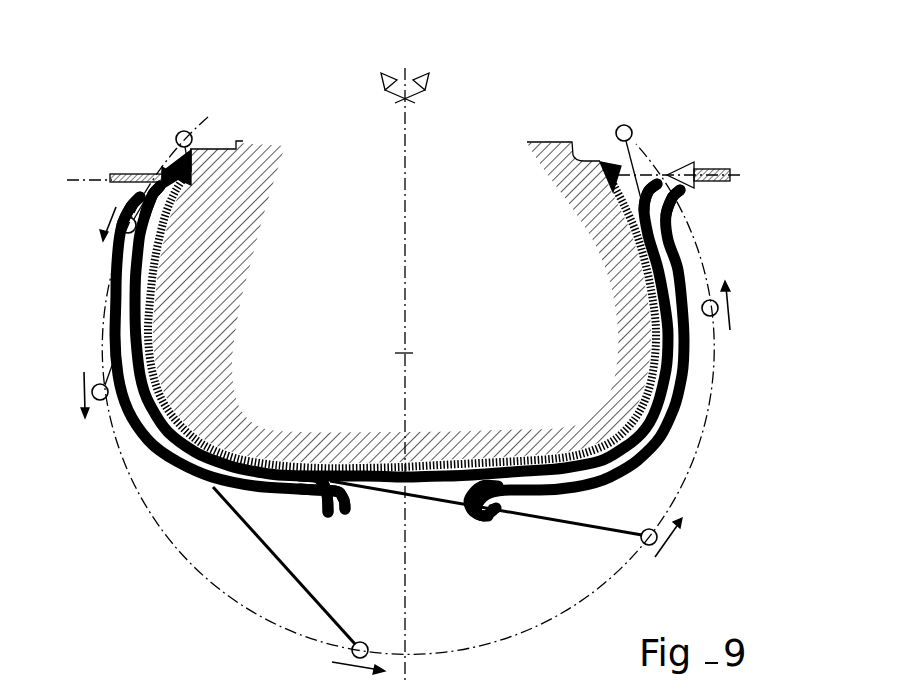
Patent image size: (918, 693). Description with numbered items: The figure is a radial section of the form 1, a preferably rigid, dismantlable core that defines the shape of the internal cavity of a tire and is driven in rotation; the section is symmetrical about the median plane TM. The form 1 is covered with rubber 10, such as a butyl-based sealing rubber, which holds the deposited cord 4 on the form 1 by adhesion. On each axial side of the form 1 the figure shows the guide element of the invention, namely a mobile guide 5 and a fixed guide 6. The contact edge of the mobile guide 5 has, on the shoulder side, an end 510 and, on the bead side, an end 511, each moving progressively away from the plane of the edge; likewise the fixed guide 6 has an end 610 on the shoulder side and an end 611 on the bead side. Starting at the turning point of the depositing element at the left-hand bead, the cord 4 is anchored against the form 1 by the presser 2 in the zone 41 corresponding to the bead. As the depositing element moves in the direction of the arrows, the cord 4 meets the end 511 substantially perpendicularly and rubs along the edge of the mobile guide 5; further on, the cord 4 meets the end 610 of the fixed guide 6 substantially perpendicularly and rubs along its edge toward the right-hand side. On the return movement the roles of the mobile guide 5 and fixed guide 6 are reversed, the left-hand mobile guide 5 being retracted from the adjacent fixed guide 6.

The form 1 is at (212, 227).
The presser 2 is at (147, 173).
The cord 4 is at (190, 157).
The zone corresponding to the bead 41 is at (160, 150).
The mobile guide 5 is at (147, 462).
The end of the contact edge of the mobile guide 510 is at (322, 506).
The end of the contact edge of the mobile guide 511 is at (140, 198).
The fixed guide 6 is at (588, 463).
The end of the contact edge of the fixed guide 610 is at (470, 495).
The end of the contact edge of the fixed guide 611 is at (600, 193).
The rubber 10 is at (363, 463).
The median plane TM is at (412, 147).